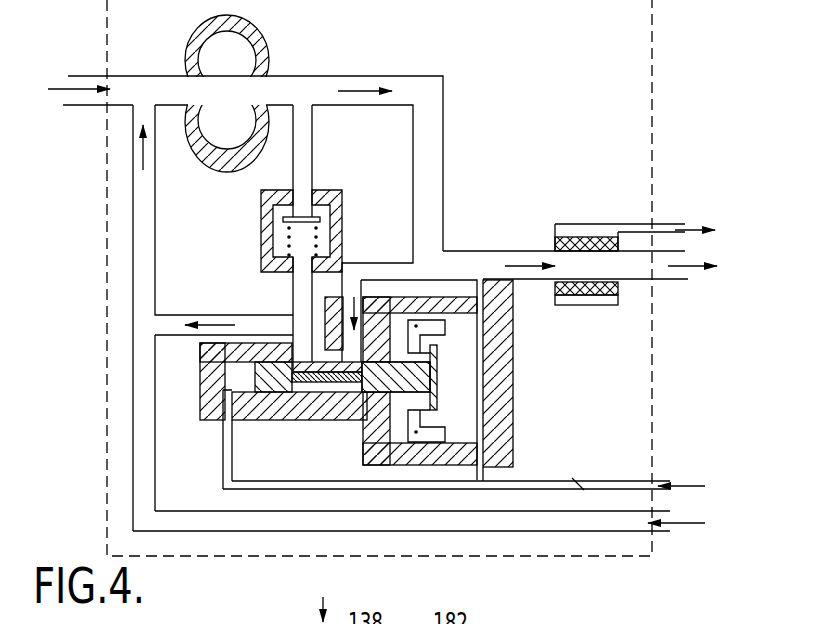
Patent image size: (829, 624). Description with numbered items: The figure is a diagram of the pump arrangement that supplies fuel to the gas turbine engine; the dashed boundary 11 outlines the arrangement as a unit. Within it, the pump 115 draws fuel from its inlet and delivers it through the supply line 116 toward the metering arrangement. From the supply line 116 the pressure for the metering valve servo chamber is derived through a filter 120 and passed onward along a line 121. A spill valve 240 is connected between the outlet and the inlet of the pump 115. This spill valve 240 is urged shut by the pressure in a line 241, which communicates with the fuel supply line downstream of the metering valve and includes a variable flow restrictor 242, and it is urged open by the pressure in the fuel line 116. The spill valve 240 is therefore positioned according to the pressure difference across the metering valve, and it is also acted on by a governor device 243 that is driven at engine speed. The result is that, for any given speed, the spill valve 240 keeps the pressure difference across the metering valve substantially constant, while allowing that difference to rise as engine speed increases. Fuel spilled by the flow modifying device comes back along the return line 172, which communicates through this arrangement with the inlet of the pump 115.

The fuser assembly housing boundary 11 is at (130, 537).
The pump 115 is at (230, 53).
The supply line 116 is at (653, 265).
The filter 120 is at (555, 238).
The line 121 is at (663, 230).
The return line 172 is at (675, 527).
The spill valve 240 is at (520, 414).
The line 241 is at (658, 480).
The variable flow restrictor 242 is at (596, 460).
The governor device 243 is at (450, 364).